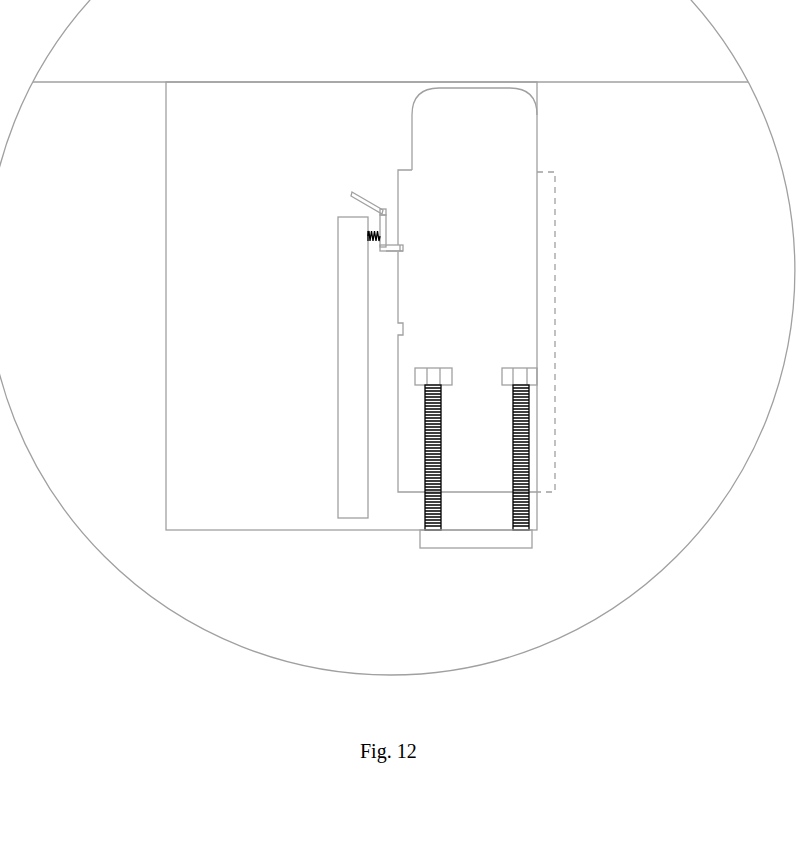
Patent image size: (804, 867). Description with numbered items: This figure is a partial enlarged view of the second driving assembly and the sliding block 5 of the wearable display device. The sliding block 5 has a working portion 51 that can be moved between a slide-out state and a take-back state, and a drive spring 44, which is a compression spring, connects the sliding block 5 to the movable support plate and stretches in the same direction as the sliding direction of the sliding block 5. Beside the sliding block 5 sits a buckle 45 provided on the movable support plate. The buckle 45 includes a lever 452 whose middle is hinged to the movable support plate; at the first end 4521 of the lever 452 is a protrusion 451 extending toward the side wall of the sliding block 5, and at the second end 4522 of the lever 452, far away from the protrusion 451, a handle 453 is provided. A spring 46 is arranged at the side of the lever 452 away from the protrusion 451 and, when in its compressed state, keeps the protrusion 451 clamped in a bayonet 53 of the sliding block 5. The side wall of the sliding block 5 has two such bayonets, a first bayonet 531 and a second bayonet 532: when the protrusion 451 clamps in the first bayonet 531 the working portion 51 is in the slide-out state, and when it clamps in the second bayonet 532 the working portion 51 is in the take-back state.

The sliding block 5 is at (513, 197).
The working portion 51 is at (470, 102).
The bayonet 53 is at (467, 331).
The first bayonet 531 is at (403, 323).
The second bayonet 532 is at (402, 250).
The drive spring 44 is at (528, 465).
The buckle 45 is at (380, 220).
The protrusion 451 is at (396, 256).
The lever 452 is at (383, 231).
The first end 4521 is at (380, 249).
The second end 4522 is at (389, 208).
The handle 453 is at (352, 192).
The spring 46 is at (368, 237).